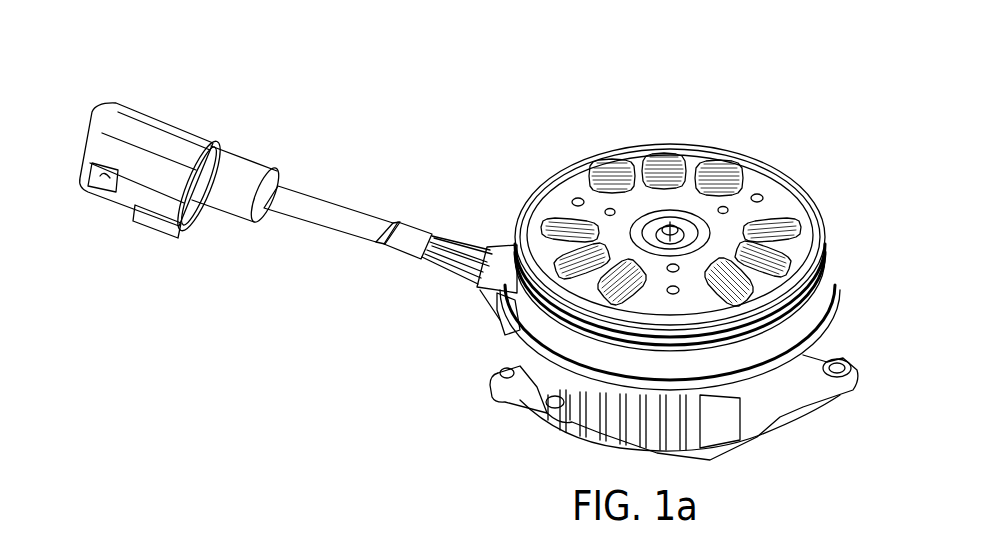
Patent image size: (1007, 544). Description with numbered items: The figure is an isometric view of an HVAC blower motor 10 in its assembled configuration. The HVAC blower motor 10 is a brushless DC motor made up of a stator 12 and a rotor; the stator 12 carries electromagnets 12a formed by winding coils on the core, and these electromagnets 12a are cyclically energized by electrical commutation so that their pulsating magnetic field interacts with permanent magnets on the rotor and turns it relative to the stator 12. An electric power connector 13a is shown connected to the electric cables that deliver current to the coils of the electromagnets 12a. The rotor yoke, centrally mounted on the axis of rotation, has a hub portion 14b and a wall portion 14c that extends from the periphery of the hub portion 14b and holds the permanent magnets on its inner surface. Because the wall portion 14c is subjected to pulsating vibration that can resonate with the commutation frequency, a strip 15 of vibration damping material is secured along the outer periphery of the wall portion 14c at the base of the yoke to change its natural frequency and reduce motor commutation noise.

The HVAC blower motor 10 is at (784, 148).
The stator 12 is at (820, 342).
The electromagnets 12a is at (770, 225).
The electric power connector 13a is at (172, 142).
The hub portion 14b is at (583, 197).
The wall portion 14c is at (821, 272).
The strip of vibration damping material 15 is at (525, 318).